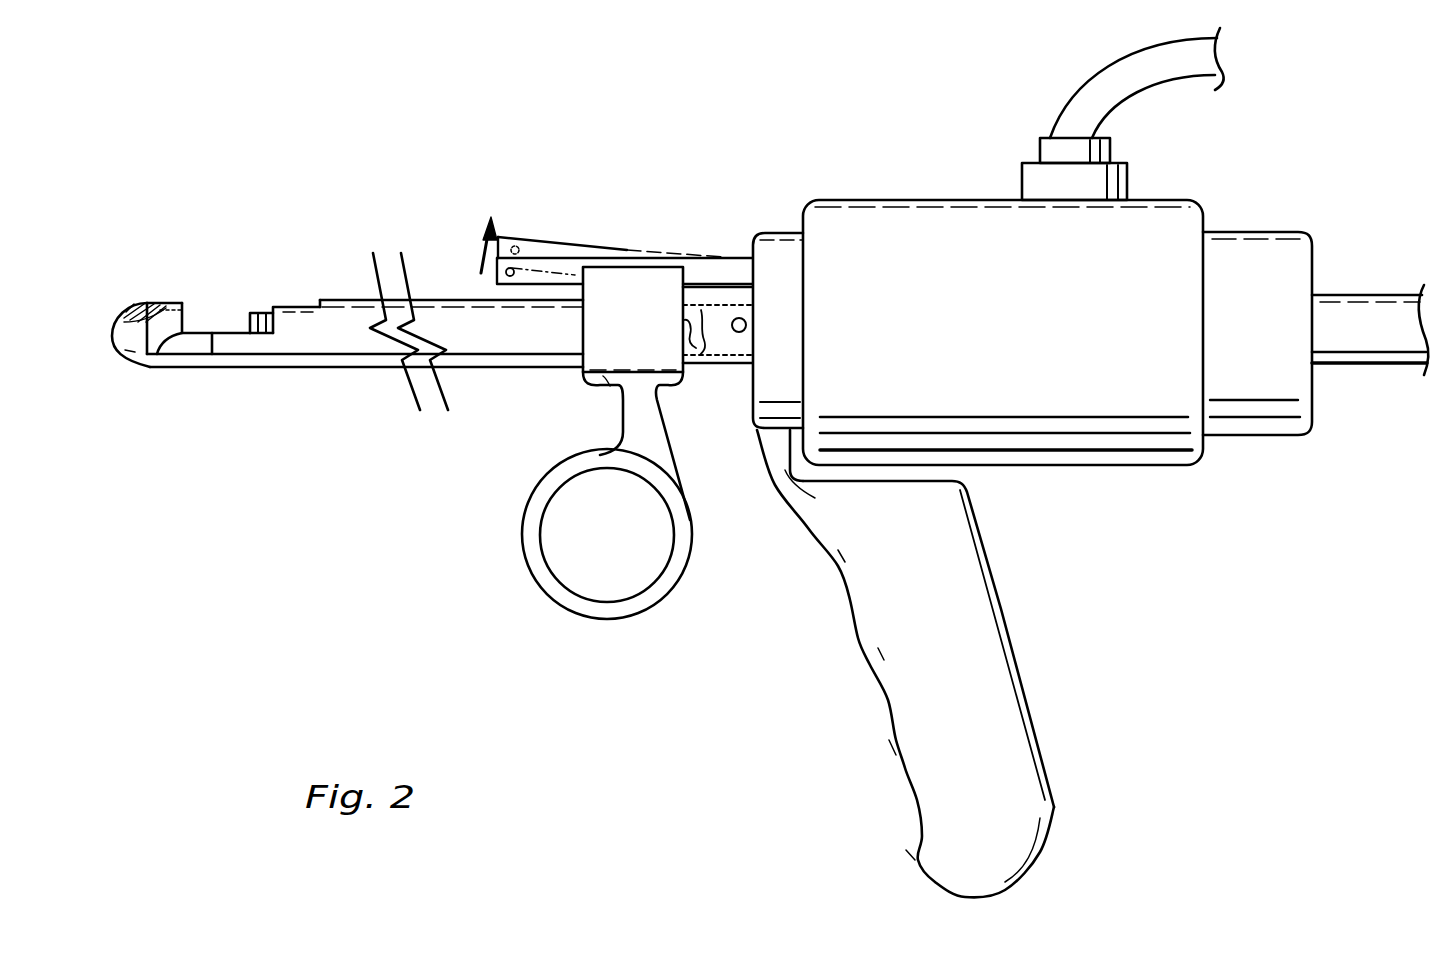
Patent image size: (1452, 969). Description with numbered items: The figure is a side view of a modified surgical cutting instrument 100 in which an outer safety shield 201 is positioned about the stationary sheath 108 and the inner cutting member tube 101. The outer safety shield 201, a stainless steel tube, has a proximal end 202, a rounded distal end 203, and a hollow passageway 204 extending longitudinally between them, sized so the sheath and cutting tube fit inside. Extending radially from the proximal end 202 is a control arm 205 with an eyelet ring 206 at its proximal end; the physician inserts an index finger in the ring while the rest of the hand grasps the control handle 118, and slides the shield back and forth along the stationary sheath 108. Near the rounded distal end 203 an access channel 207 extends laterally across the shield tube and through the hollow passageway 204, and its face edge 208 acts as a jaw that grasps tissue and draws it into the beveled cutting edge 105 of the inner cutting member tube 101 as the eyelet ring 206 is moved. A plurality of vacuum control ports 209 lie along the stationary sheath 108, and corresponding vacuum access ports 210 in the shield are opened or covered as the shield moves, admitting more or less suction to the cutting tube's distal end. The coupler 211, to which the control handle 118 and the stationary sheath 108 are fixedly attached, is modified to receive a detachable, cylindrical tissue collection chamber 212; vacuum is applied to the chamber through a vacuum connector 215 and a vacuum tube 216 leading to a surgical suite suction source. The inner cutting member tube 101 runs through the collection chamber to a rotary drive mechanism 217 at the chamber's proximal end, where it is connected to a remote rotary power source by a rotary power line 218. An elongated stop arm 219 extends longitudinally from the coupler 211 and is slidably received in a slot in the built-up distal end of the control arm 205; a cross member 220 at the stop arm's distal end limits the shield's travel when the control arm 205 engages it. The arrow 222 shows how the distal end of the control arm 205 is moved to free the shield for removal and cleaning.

The surgical cutting instrument 100 is at (741, 203).
The inner cutting member tube 101 is at (263, 318).
The cutting edge 105 is at (250, 329).
The stationary sheath 108 is at (298, 308).
The control handle 118 is at (1048, 768).
The outer safety shield 201 is at (307, 370).
The proximal end 202 is at (523, 372).
The rounded distal end 203 is at (117, 321).
The hollow passageway 204 is at (172, 312).
The control arm 205 is at (633, 420).
The eyelet ring 206 is at (543, 565).
The access channel 207 is at (213, 356).
The face edge 208 is at (161, 356).
The vacuum control ports 209 is at (693, 350).
The vacuum access ports 210 is at (713, 342).
The coupler 211 is at (765, 230).
The tissue collection chamber 212 is at (870, 196).
The vacuum connector 215 is at (1033, 162).
The vacuum tube 216 is at (1144, 84).
The rotary drive mechanism 217 is at (1243, 231).
The rotary power line 218 is at (1333, 293).
The stop arm 219 is at (563, 257).
The cross member 220 is at (523, 265).
The arrow 222 is at (478, 262).